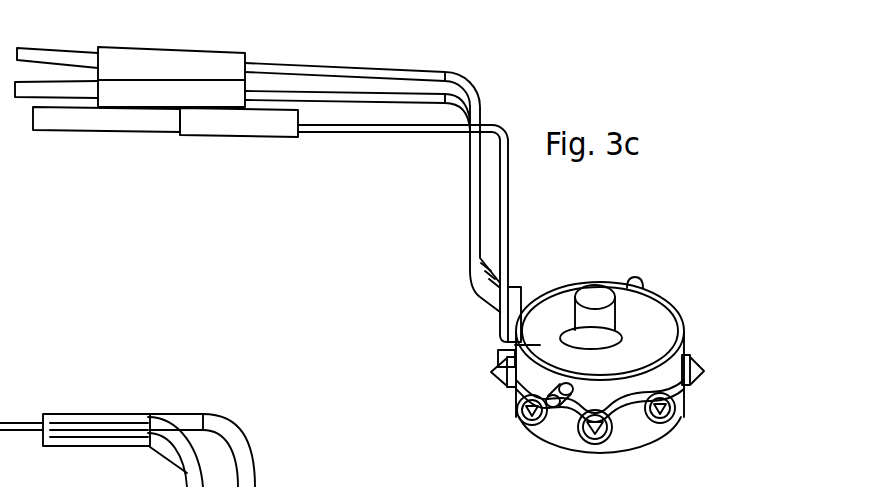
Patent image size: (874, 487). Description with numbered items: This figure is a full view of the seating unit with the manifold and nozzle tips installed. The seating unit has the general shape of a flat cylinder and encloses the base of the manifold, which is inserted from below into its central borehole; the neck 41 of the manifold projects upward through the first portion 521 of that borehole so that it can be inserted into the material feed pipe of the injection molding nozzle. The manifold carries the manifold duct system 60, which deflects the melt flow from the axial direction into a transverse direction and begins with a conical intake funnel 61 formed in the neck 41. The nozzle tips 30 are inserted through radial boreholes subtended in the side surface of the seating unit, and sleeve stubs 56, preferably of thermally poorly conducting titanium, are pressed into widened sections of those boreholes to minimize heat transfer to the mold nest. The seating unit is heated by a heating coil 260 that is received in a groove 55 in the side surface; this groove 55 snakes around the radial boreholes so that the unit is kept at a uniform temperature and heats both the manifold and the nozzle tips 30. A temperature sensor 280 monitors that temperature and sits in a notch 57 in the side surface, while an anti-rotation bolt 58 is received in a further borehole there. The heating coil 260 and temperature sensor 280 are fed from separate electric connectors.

The heating coil 260 is at (358, 75).
The temperature sensor 280 is at (330, 126).
The notch 57 is at (548, 362).
The manifold duct system 60 is at (590, 308).
The conical intake funnel 61 is at (613, 303).
The neck 41 is at (637, 285).
The anti-rotation bolt 58 is at (650, 284).
The first portion of central borehole 521 is at (640, 318).
The sleeve stub 56 is at (686, 358).
The nozzle tip 30 is at (697, 377).
The groove 55 is at (637, 430).